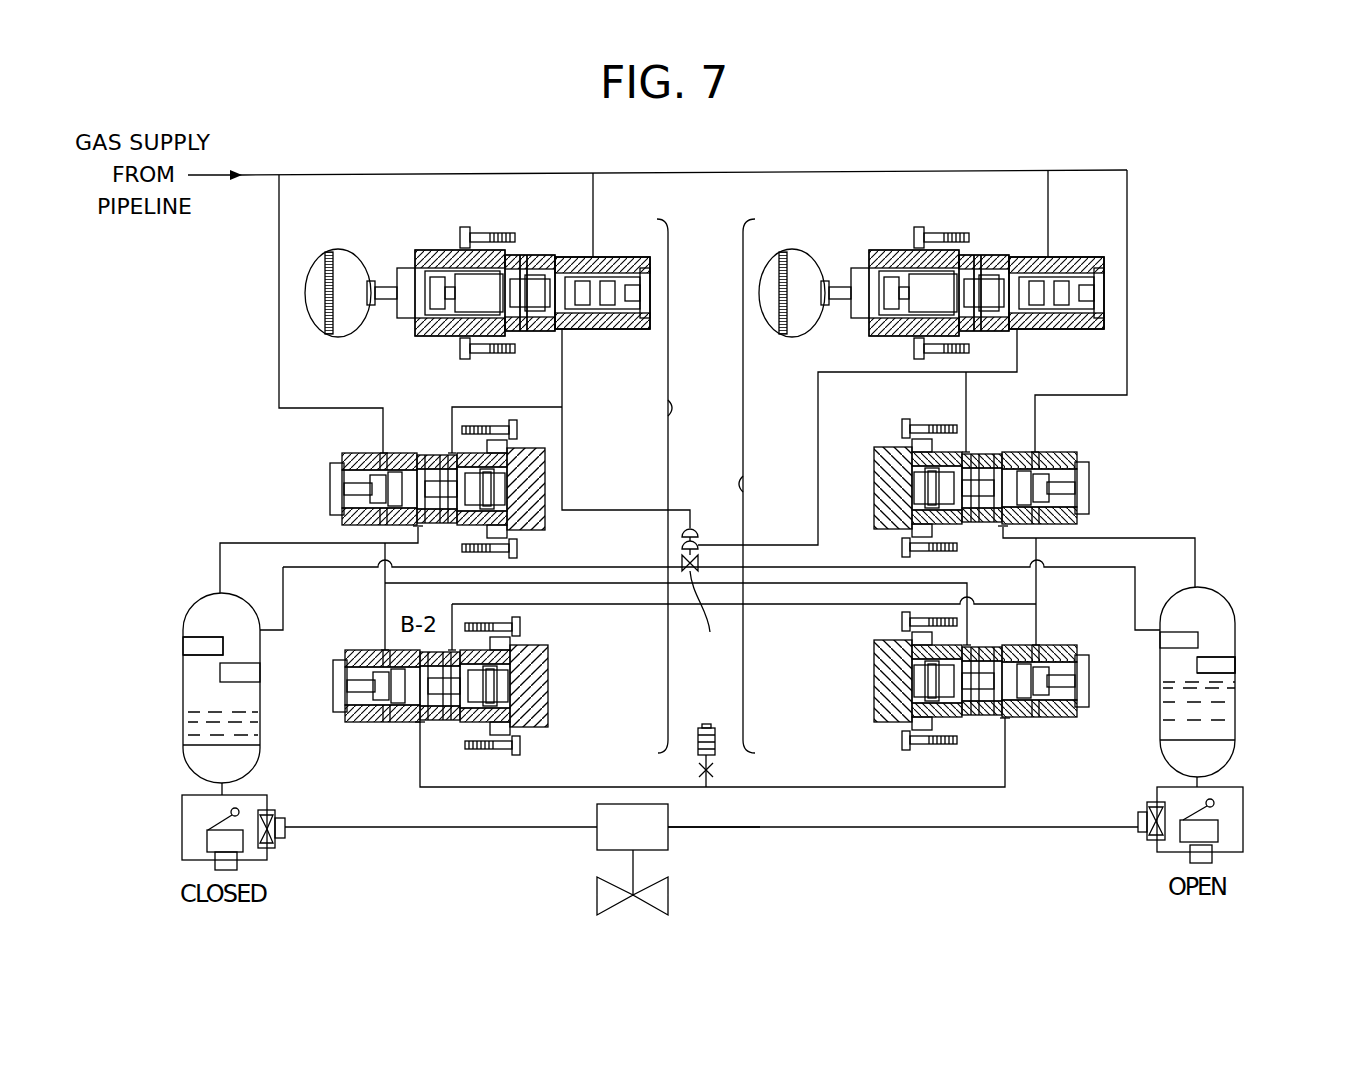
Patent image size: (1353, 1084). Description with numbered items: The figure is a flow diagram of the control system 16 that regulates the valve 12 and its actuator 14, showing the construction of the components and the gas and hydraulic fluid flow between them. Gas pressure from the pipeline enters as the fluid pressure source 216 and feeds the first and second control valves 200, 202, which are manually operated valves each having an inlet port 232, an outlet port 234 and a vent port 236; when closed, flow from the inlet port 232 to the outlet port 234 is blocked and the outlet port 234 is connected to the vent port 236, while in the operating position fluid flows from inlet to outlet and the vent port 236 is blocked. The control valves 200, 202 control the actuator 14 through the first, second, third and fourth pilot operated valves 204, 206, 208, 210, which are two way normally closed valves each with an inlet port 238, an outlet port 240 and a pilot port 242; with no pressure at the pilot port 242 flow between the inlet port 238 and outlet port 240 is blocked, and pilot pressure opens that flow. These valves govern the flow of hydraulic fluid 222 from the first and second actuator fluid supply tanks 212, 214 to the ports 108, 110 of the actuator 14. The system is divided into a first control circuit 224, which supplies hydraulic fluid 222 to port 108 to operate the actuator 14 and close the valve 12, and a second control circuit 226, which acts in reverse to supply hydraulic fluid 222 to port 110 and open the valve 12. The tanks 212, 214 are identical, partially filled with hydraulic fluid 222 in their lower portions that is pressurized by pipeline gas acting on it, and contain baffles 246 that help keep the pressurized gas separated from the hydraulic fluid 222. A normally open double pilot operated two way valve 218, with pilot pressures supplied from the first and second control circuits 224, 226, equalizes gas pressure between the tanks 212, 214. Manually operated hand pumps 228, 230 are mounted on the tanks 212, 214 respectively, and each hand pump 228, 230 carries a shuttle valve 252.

The control system 16 is at (878, 152).
The fluid pressure source 216 is at (245, 172).
The first control valve 200 is at (422, 250).
The second control valve 202 is at (864, 250).
The first pilot operated valve 204 is at (335, 456).
The second pilot operated valve 206 is at (340, 722).
The third pilot operated valve 208 is at (1093, 462).
The fourth pilot operated valve 210 is at (1087, 716).
The first actuator fluid supply tank 212 is at (183, 690).
The second actuator fluid supply tank 214 is at (1237, 680).
The double pilot operated two way valve 218 is at (708, 597).
The hydraulic fluid 222 is at (195, 730).
The first control circuit 224 is at (693, 486).
The second control circuit 226 is at (723, 486).
The hand pump 228 is at (182, 862).
The hand pump 230 is at (1188, 858).
The inlet port 232 is at (597, 258).
The outlet port 234 is at (563, 332).
The vent port 236 is at (527, 257).
The inlet port 238 is at (388, 452).
The outlet port 240 is at (416, 536).
The pilot port 242 is at (448, 452).
The baffle 246 is at (190, 637).
The shuttle valve 252 is at (280, 845).
The open port 108 is at (597, 832).
The close port 110 is at (668, 827).
The actuator 14 is at (660, 850).
The valve 12 is at (658, 908).